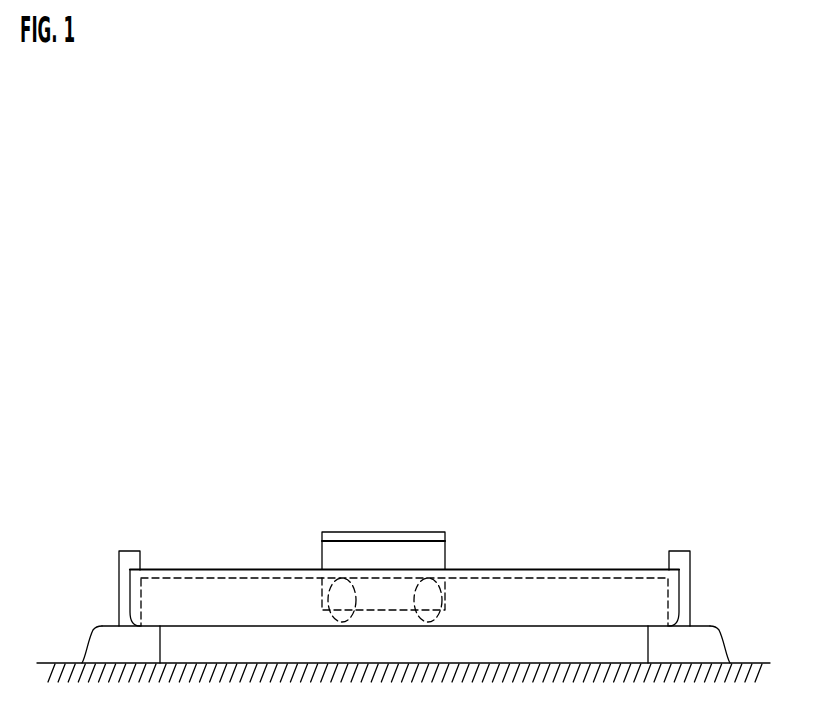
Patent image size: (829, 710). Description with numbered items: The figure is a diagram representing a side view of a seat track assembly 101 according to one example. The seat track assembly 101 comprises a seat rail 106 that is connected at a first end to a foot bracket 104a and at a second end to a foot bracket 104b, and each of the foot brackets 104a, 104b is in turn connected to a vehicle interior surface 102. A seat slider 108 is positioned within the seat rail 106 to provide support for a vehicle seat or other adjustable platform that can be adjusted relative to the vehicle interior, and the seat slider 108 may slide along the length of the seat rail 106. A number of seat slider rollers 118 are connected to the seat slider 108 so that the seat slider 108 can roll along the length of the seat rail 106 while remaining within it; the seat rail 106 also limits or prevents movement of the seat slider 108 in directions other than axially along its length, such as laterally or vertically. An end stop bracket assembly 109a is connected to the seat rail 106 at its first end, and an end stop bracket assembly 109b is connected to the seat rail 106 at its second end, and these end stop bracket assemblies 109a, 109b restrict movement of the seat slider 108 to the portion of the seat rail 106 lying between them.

The seat track assembly 101 is at (706, 134).
The vehicle interior surface 102 is at (53, 662).
The foot bracket 104a is at (707, 621).
The foot bracket 104b is at (103, 621).
The seat rail 106 is at (537, 568).
The seat slider 108 is at (363, 531).
The end stop bracket assembly 109a is at (680, 550).
The end stop bracket assembly 109b is at (133, 550).
The seat slider roller 118 is at (425, 577).